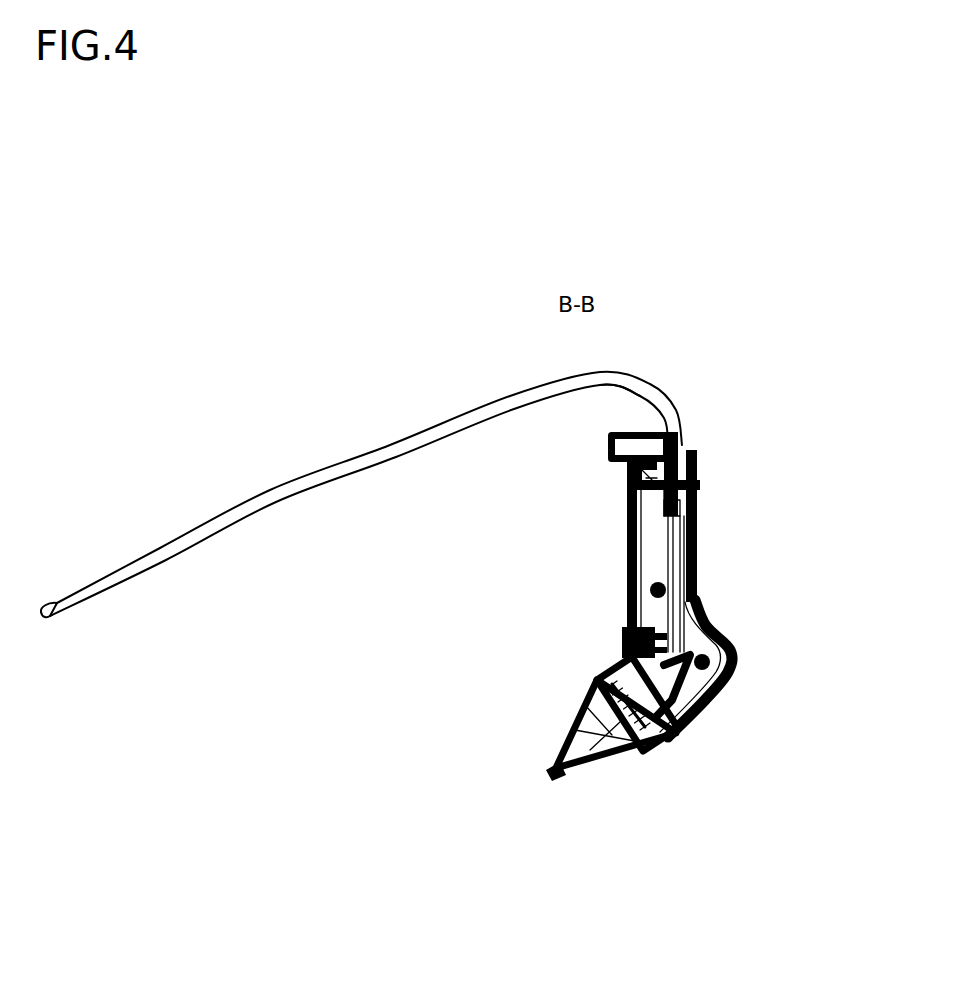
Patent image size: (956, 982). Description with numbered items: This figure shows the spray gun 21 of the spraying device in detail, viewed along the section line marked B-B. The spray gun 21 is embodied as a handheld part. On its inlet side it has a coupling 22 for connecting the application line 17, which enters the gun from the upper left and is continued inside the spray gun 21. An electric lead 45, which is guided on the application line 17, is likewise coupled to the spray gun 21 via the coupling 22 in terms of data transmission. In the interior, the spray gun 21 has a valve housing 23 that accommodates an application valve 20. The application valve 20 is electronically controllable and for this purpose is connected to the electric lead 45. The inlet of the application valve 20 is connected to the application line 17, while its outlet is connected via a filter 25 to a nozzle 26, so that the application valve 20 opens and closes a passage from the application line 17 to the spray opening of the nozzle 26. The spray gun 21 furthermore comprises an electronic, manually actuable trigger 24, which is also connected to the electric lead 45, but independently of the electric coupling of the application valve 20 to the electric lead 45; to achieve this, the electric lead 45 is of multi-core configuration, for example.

The application line 17 is at (298, 480).
The electric lead 45 is at (622, 394).
The coupling 22 is at (668, 444).
The spray gun 21 is at (610, 548).
The trigger 24 is at (614, 642).
The application valve 20 is at (594, 680).
The filter 25 is at (562, 751).
The nozzle 26 is at (546, 776).
The valve housing 23 is at (682, 732).